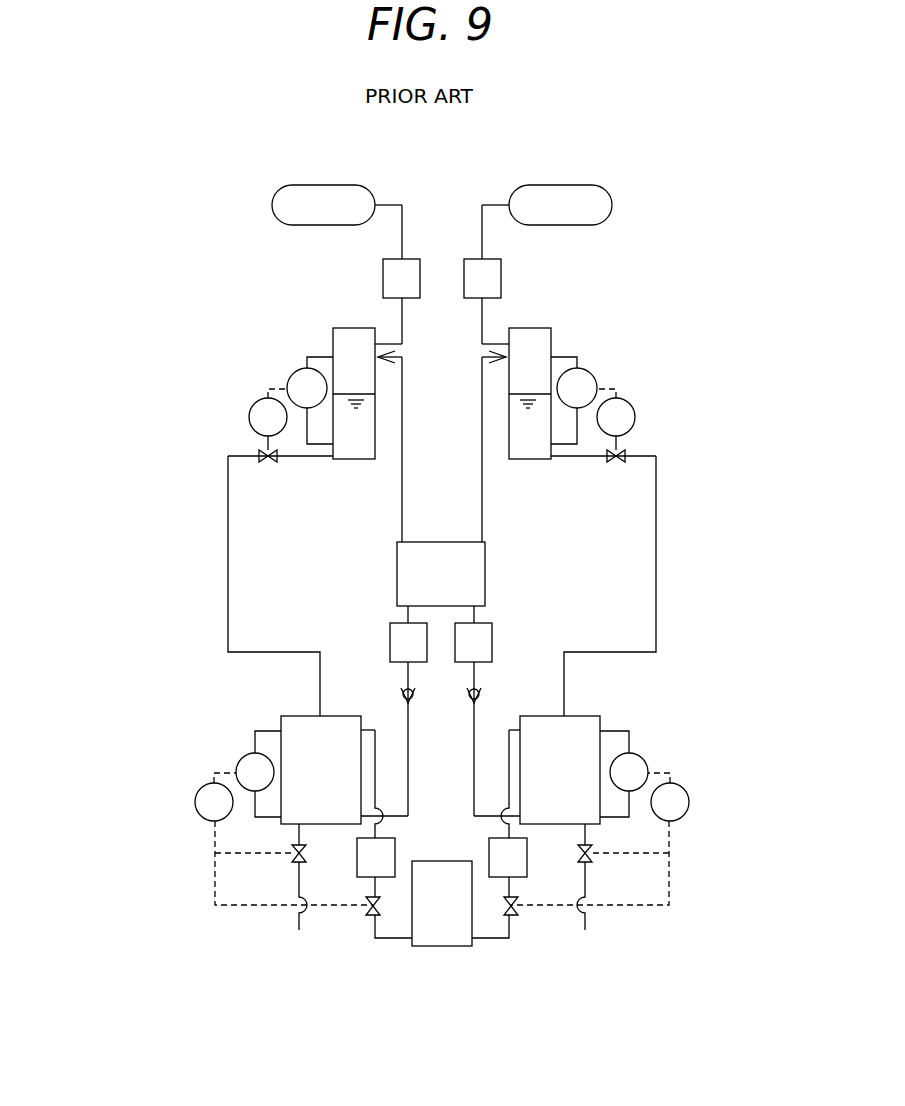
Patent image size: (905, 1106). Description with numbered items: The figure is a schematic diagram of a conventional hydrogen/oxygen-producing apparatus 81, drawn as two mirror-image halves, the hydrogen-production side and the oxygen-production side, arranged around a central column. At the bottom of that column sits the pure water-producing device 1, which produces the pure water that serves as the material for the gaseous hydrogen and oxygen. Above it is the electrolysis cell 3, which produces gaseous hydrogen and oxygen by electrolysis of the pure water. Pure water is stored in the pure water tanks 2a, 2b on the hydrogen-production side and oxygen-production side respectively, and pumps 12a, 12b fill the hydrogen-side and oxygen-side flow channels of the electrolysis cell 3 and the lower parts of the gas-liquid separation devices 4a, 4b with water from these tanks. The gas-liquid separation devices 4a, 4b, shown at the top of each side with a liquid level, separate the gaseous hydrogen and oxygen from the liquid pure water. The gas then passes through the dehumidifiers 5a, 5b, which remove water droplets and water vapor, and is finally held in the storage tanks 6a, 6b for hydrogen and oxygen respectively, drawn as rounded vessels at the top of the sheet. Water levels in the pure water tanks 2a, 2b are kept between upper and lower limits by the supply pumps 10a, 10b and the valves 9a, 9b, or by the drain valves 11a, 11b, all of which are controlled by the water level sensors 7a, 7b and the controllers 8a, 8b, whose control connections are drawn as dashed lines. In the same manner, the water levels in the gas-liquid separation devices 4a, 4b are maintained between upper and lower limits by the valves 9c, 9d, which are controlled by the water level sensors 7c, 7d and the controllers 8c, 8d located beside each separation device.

The hydrogen/oxygen-producing apparatus 81 is at (263, 102).
The pure water-producing device 1 is at (448, 917).
The pure water tank 2a is at (572, 740).
The pure water tank 2b is at (290, 738).
The electrolysis cell 3 is at (445, 585).
The gas-liquid separation device 4a is at (530, 340).
The gas-liquid separation device 4b is at (355, 340).
The dehumidifier 5a is at (480, 270).
The dehumidifier 5b is at (405, 280).
The storage tank 6a is at (575, 200).
The storage tank 6b is at (302, 205).
The water level sensor 7a is at (630, 768).
The water level sensor 7b is at (258, 775).
The water level sensor 7c is at (575, 380).
The water level sensor 7d is at (305, 385).
The controller 8a is at (665, 800).
The controller 8b is at (215, 803).
The controller 8c is at (610, 418).
The controller 8d is at (268, 412).
The valve 9a is at (516, 905).
The valve 9b is at (368, 905).
The valve 9c is at (622, 458).
The valve 9d is at (262, 457).
The supply pump 10a is at (512, 860).
The supply pump 10b is at (370, 860).
The drain valve 11a is at (592, 853).
The drain valve 11b is at (287, 852).
The pump 12a is at (490, 647).
The pump 12b is at (395, 648).